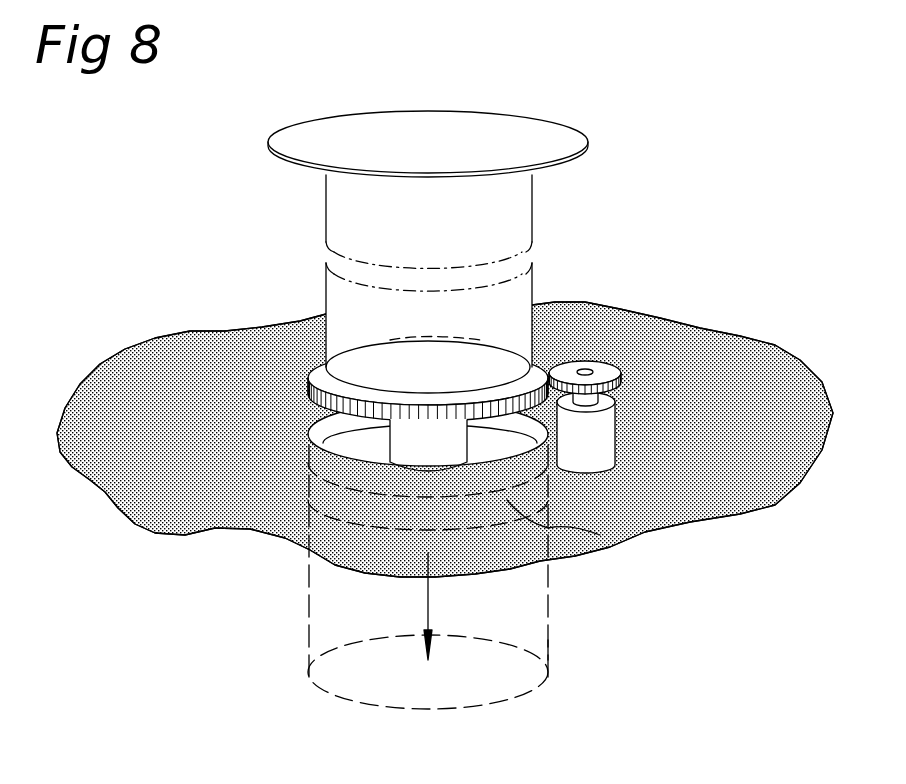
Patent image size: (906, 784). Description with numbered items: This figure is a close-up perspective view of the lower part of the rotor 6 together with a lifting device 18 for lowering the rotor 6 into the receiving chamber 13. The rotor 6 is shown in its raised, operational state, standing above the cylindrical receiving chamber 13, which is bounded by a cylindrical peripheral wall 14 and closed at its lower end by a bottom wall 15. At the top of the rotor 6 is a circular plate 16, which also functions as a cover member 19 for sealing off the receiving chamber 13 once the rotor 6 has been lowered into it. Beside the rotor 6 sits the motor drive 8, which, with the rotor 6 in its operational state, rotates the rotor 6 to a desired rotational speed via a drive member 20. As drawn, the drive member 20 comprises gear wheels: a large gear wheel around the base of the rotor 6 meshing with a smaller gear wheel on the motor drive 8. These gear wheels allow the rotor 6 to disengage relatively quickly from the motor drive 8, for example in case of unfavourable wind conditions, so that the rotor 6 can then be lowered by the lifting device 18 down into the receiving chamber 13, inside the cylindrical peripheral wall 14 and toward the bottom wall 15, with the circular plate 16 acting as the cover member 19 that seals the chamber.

The rotor 6 is at (296, 296).
The motor drive 8 is at (605, 428).
The receiving chamber 13 is at (296, 622).
The cylindrical peripheral wall 14 is at (548, 648).
The bottom wall 15 is at (500, 706).
The circular plate 16 is at (553, 100).
The lifting device 18 is at (608, 543).
The cover member 19 is at (602, 145).
The drive member 20 is at (545, 358).